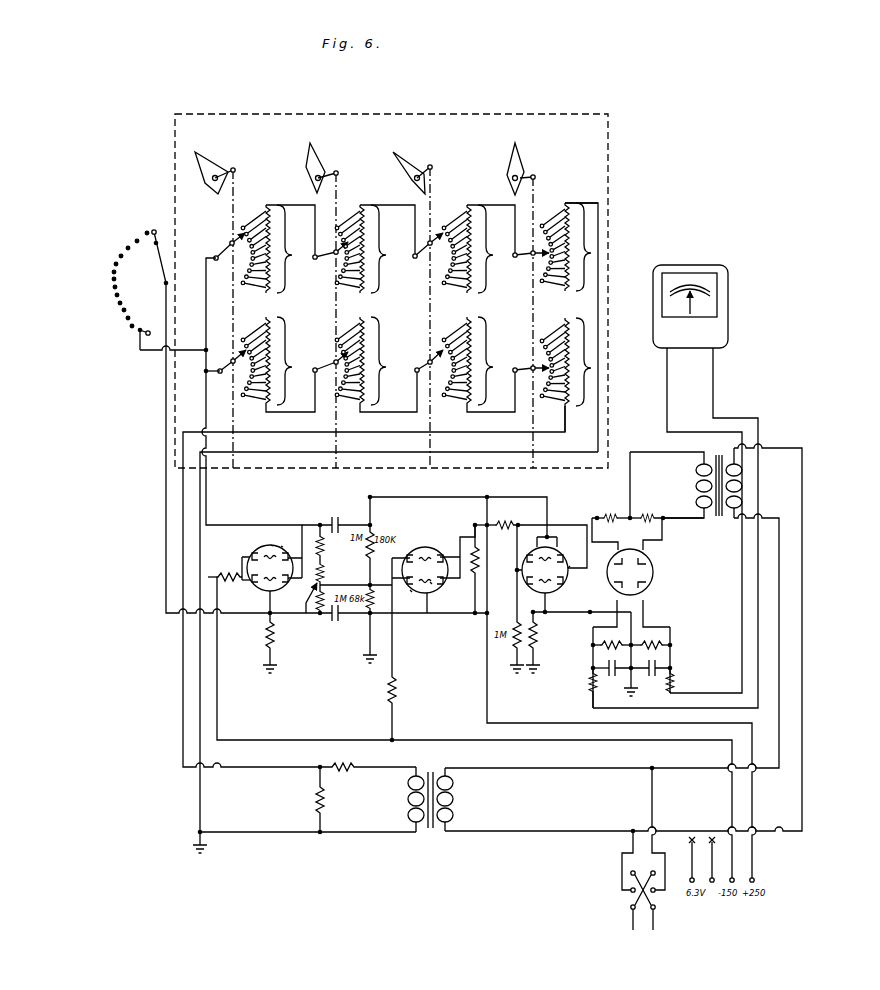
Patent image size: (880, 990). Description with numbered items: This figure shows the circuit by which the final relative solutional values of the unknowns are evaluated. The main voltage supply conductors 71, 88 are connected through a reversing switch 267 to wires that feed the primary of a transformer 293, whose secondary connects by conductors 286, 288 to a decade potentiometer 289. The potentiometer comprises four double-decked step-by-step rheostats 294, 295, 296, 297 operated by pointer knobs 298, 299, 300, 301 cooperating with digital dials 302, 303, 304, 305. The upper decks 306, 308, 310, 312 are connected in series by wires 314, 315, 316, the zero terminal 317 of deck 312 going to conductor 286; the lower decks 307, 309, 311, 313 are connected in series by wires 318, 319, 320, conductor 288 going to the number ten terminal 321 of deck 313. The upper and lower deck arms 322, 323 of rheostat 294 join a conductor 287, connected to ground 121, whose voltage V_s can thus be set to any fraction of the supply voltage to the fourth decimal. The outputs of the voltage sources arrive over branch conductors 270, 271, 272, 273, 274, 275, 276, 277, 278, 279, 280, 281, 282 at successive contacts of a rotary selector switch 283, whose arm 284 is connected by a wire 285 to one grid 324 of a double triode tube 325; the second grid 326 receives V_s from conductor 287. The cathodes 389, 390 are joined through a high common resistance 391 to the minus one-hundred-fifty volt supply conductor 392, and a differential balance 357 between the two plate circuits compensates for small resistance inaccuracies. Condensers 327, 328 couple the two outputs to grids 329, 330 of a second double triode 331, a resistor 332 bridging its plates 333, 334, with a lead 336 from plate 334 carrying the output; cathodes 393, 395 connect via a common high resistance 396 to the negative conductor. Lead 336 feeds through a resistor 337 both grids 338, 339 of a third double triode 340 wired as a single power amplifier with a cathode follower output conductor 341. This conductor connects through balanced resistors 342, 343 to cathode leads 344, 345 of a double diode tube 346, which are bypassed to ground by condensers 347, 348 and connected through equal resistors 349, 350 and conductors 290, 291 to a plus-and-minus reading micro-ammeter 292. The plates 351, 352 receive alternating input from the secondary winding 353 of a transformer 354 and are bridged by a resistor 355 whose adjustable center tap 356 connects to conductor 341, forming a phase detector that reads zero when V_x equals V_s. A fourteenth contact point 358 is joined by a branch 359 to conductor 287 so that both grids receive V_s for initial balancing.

The branch conductor 270 is at (144, 233).
The branch conductor 271 is at (134, 241).
The branch conductor 272 is at (125, 248).
The branch conductor 273 is at (118, 256).
The branch conductor 274 is at (113, 264).
The branch conductor 275 is at (111, 272).
The branch conductor 276 is at (111, 279).
The branch conductor 277 is at (112, 287).
The branch conductor 278 is at (114, 295).
The branch conductor 279 is at (117, 303).
The branch conductor 280 is at (121, 310).
The branch conductor 281 is at (125, 318).
The branch conductor 282 is at (129, 326).
The rotary selector switch 283 is at (131, 331).
The movable contact arm 284 is at (160, 252).
The wire 285 is at (166, 368).
The conductor 286 is at (198, 500).
The conductor 287 is at (206, 297).
The conductor 288 is at (183, 662).
The decade potentiometer 289 is at (297, 478).
The conductor 290 is at (716, 372).
The conductor 291 is at (666, 396).
The micro-ammeter 292 is at (730, 330).
The transformer 293 is at (435, 767).
The step-by-step rheostat 294 is at (236, 208).
The step-by-step rheostat 295 is at (340, 211).
The step-by-step rheostat 296 is at (434, 207).
The step-by-step rheostat 297 is at (536, 190).
The operating pointer knob 298 is at (199, 168).
The operating pointer knob 299 is at (308, 170).
The operating pointer knob 300 is at (403, 175).
The operating pointer knob 301 is at (508, 178).
The digital dial 302 is at (180, 140).
The digital dial 303 is at (346, 143).
The digital dial 304 is at (452, 146).
The digital dial 305 is at (550, 158).
The upper deck 306 is at (283, 250).
The lower deck 307 is at (282, 335).
The upper deck 308 is at (375, 273).
The lower deck 309 is at (376, 340).
The upper deck 310 is at (480, 274).
The lower deck 311 is at (479, 340).
The upper deck 312 is at (573, 243).
The lower deck 313 is at (574, 341).
The wire 314 is at (283, 212).
The wire 315 is at (378, 211).
The wire 316 is at (478, 211).
The zero terminal 317 is at (582, 204).
The wire 318 is at (315, 404).
The wire 319 is at (413, 404).
The wire 320 is at (508, 413).
The number 10 terminal 321 is at (578, 430).
The upper deck arm 322 is at (228, 244).
The lower deck arm 323 is at (230, 378).
The grid 324 is at (262, 591).
The double triode tube 325 is at (283, 545).
The grid 326 is at (272, 545).
The condenser 327 is at (345, 624).
The condenser 328 is at (340, 518).
The grid 329 is at (430, 606).
The grid 330 is at (413, 551).
The double triode 331 is at (412, 591).
The resistor 332 is at (470, 614).
The plate 333 is at (432, 584).
The plate 334 is at (474, 530).
The output lead 336 is at (482, 489).
The resistor 337 is at (518, 521).
The grid 338 is at (522, 572).
The grid 339 is at (571, 565).
The double triode 340 is at (538, 540).
The cathode follower output conductor 341 is at (590, 613).
The balanced resistor 342 is at (598, 665).
The balanced resistor 343 is at (672, 646).
The cathode lead 344 is at (593, 645).
The cathode lead 345 is at (672, 628).
The double diode tube 346 is at (652, 582).
The condenser 347 is at (620, 676).
The condenser 348 is at (658, 676).
The resistor 349 is at (591, 677).
The resistor 350 is at (675, 684).
The plate 351 is at (616, 556).
The plate 352 is at (648, 556).
The secondary winding 353 is at (696, 478).
The transformer 354 is at (707, 456).
The resistor 355 is at (629, 514).
The adjustable center tap 356 is at (633, 521).
The differential balance 357 is at (305, 615).
The 14th contact point 358 is at (142, 326).
The branch 359 is at (183, 346).
The cathode 389 is at (250, 581).
The cathode 390 is at (251, 556).
The common resistance 391 is at (212, 578).
The supply conductor 392 is at (218, 708).
The cathode 393 is at (405, 557).
The cathode 395 is at (400, 579).
The common high resistance 396 is at (388, 682).
The ground 121 is at (193, 848).
The reversing switch 267 is at (631, 897).
The main voltage supply conductor 88 is at (631, 914).
The main voltage supply conductor 71 is at (655, 920).